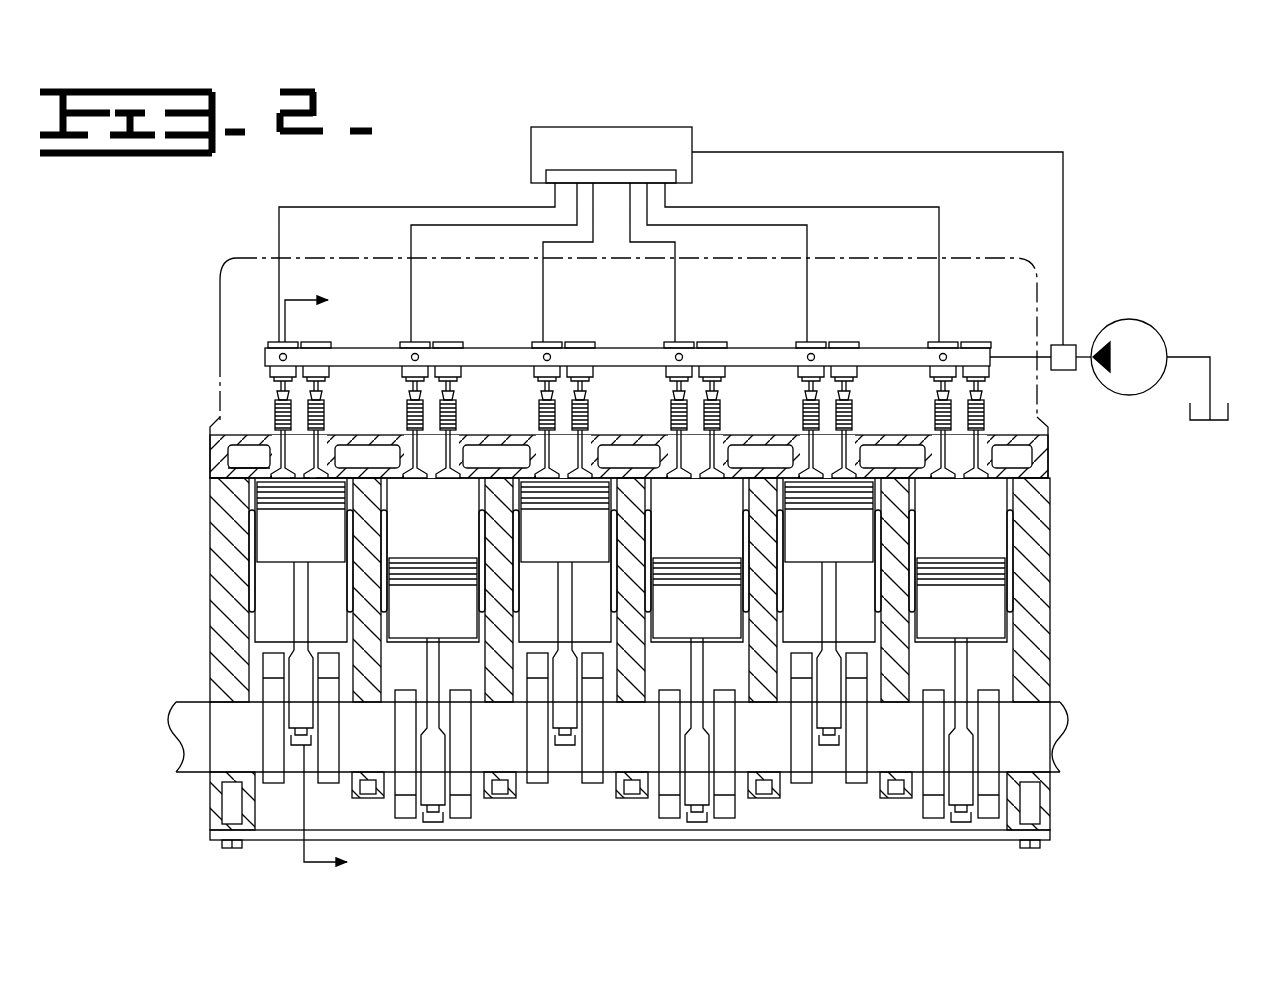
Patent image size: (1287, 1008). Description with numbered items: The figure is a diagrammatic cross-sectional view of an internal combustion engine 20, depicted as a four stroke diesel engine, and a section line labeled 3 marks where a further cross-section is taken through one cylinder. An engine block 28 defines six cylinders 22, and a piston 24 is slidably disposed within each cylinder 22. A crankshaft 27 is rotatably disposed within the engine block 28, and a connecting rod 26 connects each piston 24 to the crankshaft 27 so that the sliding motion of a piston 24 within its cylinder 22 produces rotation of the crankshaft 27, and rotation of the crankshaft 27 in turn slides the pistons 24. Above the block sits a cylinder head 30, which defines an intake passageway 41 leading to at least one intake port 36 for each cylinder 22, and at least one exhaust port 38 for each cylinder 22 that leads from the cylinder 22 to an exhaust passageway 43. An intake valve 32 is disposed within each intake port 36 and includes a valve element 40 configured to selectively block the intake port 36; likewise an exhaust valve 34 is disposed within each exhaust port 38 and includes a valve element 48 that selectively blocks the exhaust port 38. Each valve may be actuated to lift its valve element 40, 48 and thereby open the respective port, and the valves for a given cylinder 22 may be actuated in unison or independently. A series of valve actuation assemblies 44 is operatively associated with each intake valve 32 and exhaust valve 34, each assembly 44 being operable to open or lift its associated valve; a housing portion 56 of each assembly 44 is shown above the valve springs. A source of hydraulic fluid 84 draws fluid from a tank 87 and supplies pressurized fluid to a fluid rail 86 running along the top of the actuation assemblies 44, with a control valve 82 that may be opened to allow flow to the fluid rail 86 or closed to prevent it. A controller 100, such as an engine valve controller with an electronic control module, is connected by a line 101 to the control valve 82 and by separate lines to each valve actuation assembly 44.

The engine 20 is at (1077, 133).
The cylinder 22 is at (631, 560).
The piston 24 is at (631, 560).
The connecting rod 26 is at (292, 618).
The crankshaft 27 is at (195, 702).
The engine block 28 is at (215, 600).
The cylinder head 30 is at (1048, 466).
The intake valve 32 is at (323, 400).
The exhaust valve 34 is at (280, 450).
The intake port 36 is at (345, 480).
The exhaust port 38 is at (300, 478).
The valve element 40 is at (325, 484).
The intake passageway 41 is at (630, 456).
The exhaust passageway 43 is at (186, 380).
The valve actuation assembly 44 is at (946, 342).
The valve element 48 is at (275, 468).
The actuator housing 56 is at (322, 372).
The control valve 82 is at (1066, 370).
The source of hydraulic fluid 84 is at (1130, 320).
The fluid rail 86 is at (775, 350).
The tank 87 is at (1190, 417).
The controller 100 is at (609, 234).
The control line 101 is at (652, 168).
The section line 3- 3 is at (305, 584).